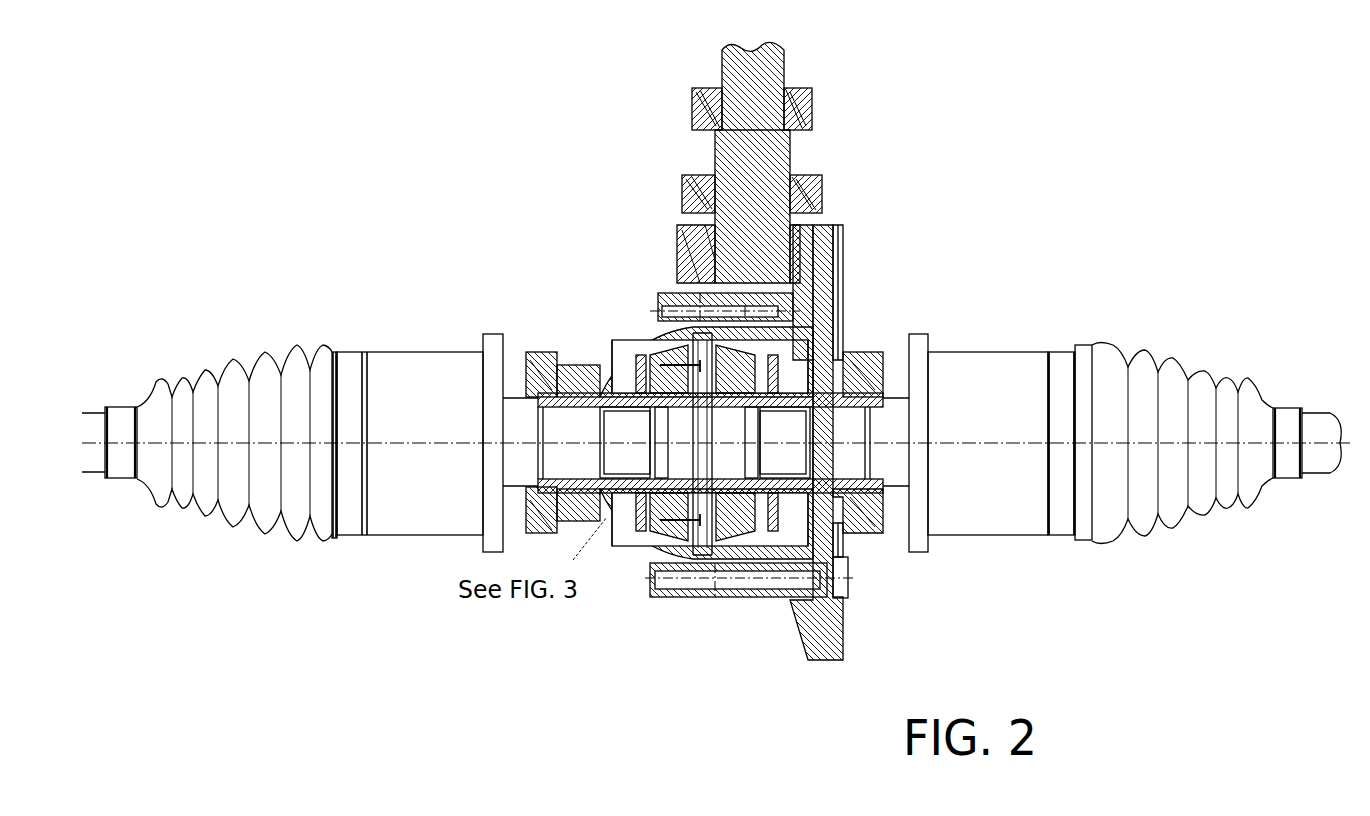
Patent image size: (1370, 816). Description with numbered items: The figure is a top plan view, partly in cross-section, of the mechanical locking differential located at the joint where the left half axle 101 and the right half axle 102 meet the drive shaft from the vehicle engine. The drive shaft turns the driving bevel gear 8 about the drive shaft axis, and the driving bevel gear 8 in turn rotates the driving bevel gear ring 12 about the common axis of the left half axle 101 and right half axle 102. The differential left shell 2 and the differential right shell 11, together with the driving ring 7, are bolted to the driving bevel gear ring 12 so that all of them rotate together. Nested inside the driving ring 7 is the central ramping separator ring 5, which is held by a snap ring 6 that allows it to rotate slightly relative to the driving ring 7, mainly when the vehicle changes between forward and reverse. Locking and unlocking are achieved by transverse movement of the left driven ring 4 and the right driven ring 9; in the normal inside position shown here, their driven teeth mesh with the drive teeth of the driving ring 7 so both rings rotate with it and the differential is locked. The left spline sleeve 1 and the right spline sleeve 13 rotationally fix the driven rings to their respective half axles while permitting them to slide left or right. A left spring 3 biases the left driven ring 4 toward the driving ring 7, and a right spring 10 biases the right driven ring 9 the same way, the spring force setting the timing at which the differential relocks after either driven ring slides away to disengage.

The left spline sleeve 1 is at (590, 393).
The differential left shell 2 is at (617, 367).
The left spring 3 is at (640, 355).
The left driven ring 4 is at (662, 340).
The central ramping separator ring 5 is at (690, 330).
The snap ring 6 is at (705, 300).
The driving ring 7 is at (720, 290).
The driving bevel gear 8 is at (717, 165).
The right driven ring 9 is at (793, 282).
The right spring 10 is at (833, 243).
The differential right shell 11 is at (837, 280).
The driving bevel gear ring 12 is at (843, 302).
The right spline sleeve 13 is at (850, 343).
The left half axle 101 is at (520, 438).
The right half axle 102 is at (893, 418).